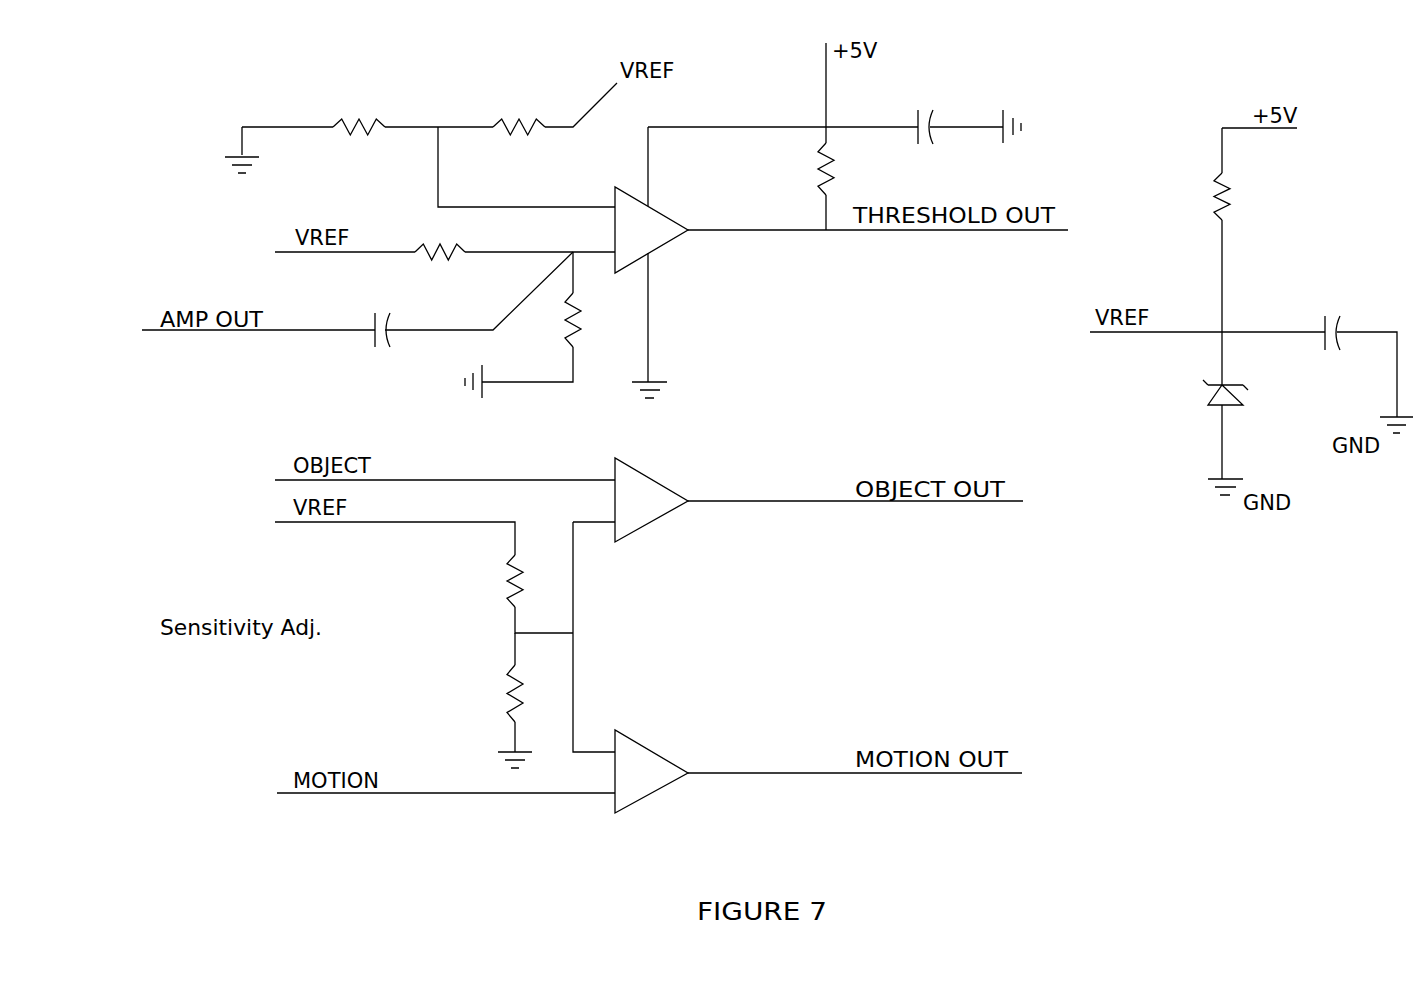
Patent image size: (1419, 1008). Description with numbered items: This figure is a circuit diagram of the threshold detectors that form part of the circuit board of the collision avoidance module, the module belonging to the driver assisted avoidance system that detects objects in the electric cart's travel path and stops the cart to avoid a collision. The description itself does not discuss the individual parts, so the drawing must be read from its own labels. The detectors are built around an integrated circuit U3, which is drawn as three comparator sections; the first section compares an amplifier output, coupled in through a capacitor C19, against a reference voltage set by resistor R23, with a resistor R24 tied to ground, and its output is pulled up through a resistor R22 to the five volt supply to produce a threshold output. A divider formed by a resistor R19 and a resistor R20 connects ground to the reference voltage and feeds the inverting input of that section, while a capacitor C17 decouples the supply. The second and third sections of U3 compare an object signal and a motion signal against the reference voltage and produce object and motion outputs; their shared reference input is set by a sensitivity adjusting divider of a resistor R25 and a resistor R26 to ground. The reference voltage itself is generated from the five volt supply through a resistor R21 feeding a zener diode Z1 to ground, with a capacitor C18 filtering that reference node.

The resistor 20K 1% R19 is at (359, 128).
The resistor 17k 1% R20 is at (519, 128).
The resistor 220 R21 is at (1198, 196).
The resistor 1k R22 is at (800, 169).
The resistor 20k 1% R23 is at (439, 253).
The resistor 20K 1% R24 is at (597, 319).
The resistor 33k 1% R25 is at (490, 582).
The resistor 8.2k 1% R26 is at (490, 694).
The capacitor 1uf C17 is at (923, 125).
The capacitor 1uf C18 is at (1330, 333).
The capacitor 820pf C19 is at (378, 330).
The 3.9V zener diode Z1 is at (1159, 394).
The LM339AJA comparator U3 is at (702, 501).